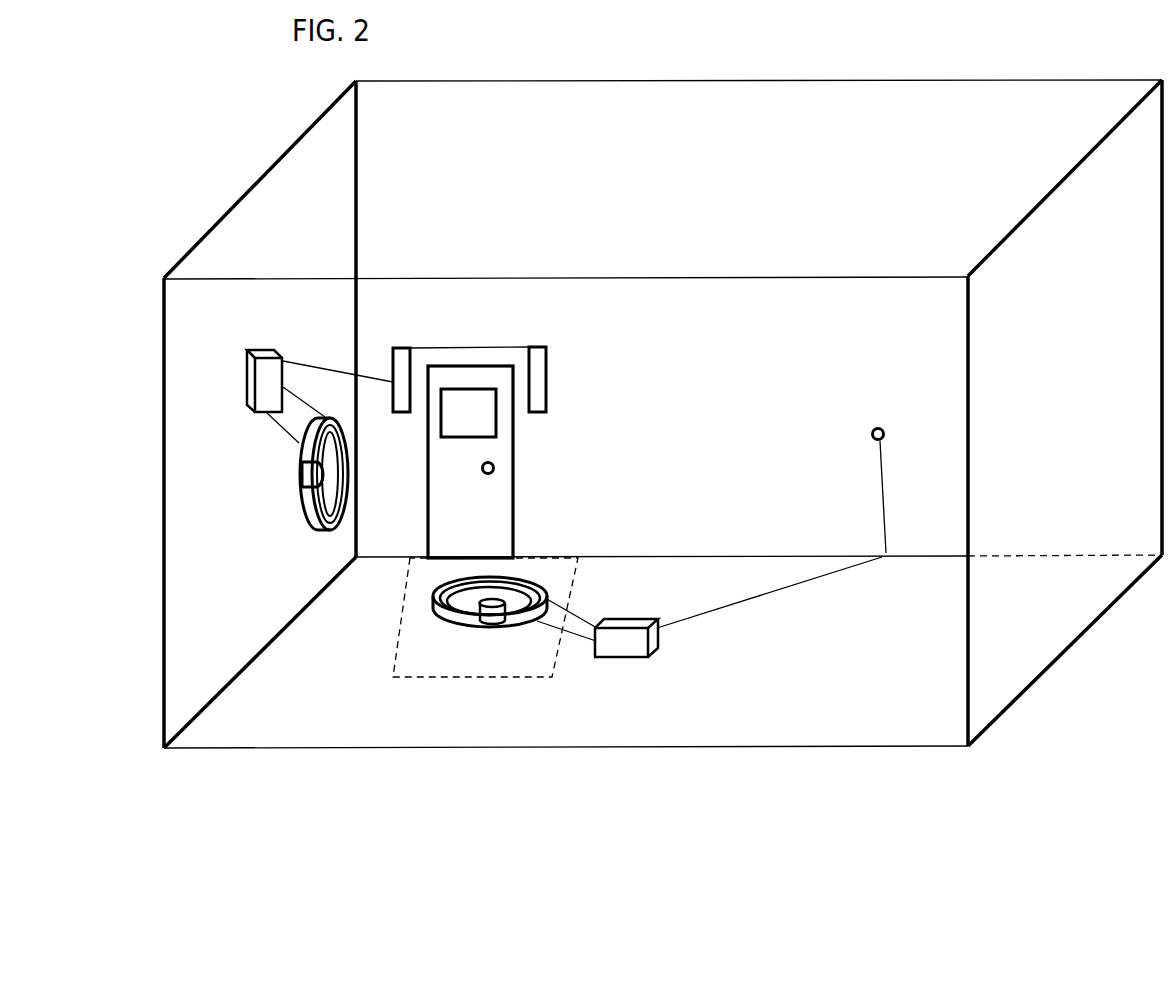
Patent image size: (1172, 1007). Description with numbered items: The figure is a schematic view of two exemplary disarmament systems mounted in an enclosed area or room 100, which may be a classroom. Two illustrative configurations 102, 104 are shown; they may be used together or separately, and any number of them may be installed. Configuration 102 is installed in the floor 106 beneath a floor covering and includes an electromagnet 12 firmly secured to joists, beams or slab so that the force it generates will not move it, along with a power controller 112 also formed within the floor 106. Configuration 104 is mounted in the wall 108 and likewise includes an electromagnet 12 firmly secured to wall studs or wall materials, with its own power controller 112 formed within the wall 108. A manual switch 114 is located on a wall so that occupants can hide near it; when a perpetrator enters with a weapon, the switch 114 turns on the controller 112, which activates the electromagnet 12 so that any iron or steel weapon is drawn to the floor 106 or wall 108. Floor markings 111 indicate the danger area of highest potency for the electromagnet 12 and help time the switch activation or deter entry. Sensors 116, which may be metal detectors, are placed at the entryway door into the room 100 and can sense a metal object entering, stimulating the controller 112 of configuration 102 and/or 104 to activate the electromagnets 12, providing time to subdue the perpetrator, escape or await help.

The room 100 is at (832, 212).
The configuration 102 is at (572, 577).
The configuration 104 is at (275, 488).
The floor 106 is at (862, 713).
The wall 108 is at (204, 620).
The markings 111 is at (495, 678).
The power controller 112 is at (248, 377).
The switch 114 is at (887, 427).
The sensors 116 is at (469, 396).
The electromagnet 12 is at (310, 546).